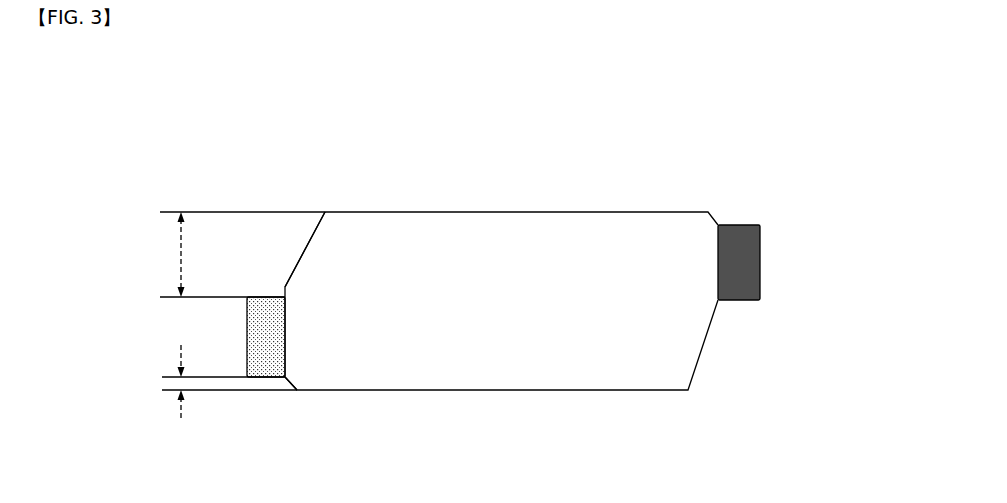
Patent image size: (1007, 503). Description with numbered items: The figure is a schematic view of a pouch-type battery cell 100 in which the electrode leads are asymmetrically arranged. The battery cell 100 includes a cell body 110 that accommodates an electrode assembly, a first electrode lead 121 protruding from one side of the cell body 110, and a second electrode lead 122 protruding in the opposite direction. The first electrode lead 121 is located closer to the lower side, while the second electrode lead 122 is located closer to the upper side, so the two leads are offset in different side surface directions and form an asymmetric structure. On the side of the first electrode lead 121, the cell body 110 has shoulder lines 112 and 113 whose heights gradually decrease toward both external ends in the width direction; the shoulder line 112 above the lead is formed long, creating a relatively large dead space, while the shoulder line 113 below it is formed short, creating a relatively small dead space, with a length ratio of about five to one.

The battery cell 100 is at (152, 118).
The cell body 110 is at (502, 211).
The shoulder line 112 is at (308, 242).
The shoulder line 113 is at (290, 389).
The first electrode lead 121 is at (247, 328).
The second electrode lead 122 is at (760, 258).